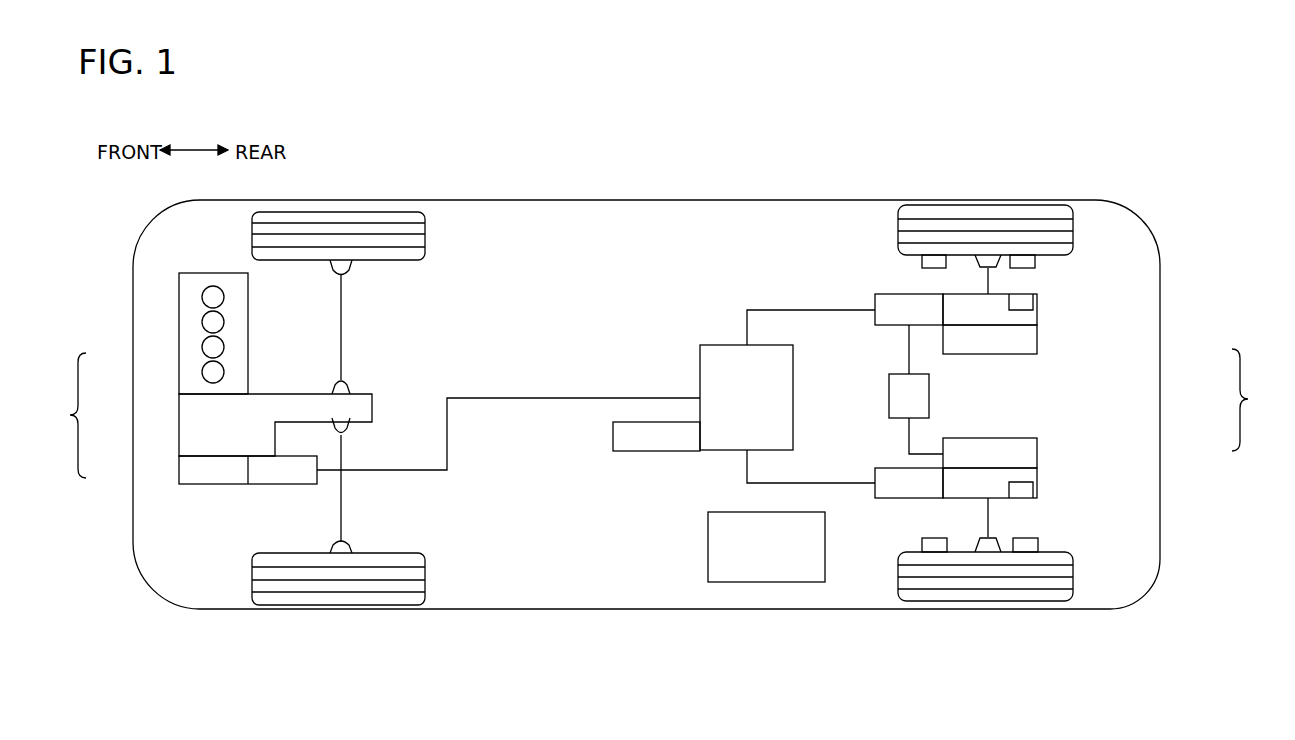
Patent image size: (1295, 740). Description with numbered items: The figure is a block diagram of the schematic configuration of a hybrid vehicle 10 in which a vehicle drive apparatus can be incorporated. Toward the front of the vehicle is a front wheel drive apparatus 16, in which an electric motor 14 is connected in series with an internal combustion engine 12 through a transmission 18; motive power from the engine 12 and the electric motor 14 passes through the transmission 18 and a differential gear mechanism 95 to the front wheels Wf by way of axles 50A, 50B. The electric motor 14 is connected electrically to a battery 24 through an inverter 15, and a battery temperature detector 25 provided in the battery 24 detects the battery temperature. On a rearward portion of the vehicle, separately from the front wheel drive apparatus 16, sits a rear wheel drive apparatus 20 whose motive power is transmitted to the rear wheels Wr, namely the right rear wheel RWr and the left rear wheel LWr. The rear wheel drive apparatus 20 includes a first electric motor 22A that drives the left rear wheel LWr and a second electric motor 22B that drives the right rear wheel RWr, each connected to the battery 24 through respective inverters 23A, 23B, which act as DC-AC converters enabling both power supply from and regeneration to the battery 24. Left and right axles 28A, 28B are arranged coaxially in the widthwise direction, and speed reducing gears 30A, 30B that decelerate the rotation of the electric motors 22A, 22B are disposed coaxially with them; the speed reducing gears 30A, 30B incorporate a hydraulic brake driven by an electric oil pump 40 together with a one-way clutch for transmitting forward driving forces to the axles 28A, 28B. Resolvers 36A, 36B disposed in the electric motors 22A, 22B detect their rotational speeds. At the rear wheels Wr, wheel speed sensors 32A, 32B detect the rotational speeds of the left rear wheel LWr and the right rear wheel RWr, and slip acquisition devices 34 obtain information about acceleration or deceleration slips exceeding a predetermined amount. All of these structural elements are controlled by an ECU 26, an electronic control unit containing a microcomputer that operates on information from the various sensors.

The vehicle 10 is at (452, 140).
The internal combustion engine 12 is at (188, 370).
The electric motor 14 is at (190, 470).
The inverter 15 is at (303, 484).
The front wheel drive apparatus 16 is at (64, 415).
The transmission 18 is at (190, 421).
The rear wheel drive apparatus 20 is at (1126, 321).
The first electric motor 22A is at (955, 493).
The second electric motor 22B is at (952, 298).
The inverter 23A is at (878, 476).
The inverter 23B is at (878, 303).
The battery 24 is at (713, 345).
The battery temperature detector 25 is at (613, 437).
The ECU 26 is at (708, 546).
The axle 28A is at (985, 522).
The axle 28B is at (985, 283).
The speed reducing gear 30A is at (1022, 449).
The speed reducing gear 30B is at (1025, 345).
The wheel speed sensor 32A is at (1025, 545).
The wheel speed sensor 32B is at (1025, 262).
The slip acquisition device 34 is at (934, 262).
The resolver 36A is at (1022, 494).
The resolver 36B is at (1022, 300).
The electric oil pump 40 is at (889, 396).
The axle 50A is at (341, 516).
The axle 50B is at (341, 320).
The differential gear mechanism 95 is at (352, 386).
The front wheels Wf is at (425, 236).
The rear wheels Wr is at (1254, 400).
The right rear wheel RWr is at (1064, 225).
The left rear wheel LWr is at (1064, 573).